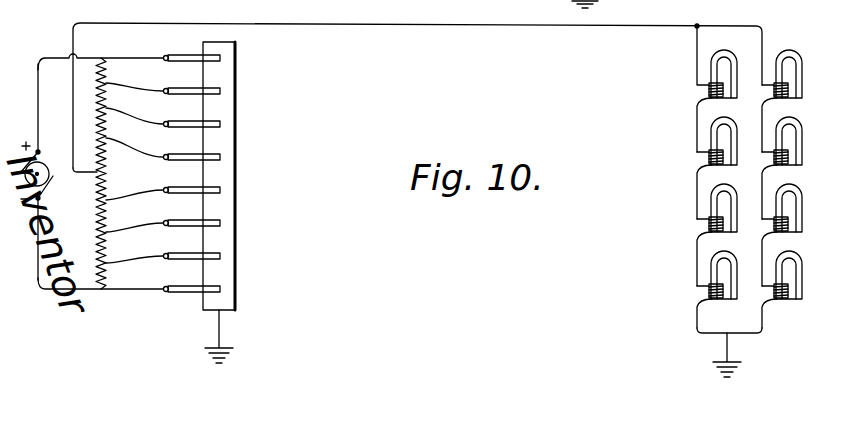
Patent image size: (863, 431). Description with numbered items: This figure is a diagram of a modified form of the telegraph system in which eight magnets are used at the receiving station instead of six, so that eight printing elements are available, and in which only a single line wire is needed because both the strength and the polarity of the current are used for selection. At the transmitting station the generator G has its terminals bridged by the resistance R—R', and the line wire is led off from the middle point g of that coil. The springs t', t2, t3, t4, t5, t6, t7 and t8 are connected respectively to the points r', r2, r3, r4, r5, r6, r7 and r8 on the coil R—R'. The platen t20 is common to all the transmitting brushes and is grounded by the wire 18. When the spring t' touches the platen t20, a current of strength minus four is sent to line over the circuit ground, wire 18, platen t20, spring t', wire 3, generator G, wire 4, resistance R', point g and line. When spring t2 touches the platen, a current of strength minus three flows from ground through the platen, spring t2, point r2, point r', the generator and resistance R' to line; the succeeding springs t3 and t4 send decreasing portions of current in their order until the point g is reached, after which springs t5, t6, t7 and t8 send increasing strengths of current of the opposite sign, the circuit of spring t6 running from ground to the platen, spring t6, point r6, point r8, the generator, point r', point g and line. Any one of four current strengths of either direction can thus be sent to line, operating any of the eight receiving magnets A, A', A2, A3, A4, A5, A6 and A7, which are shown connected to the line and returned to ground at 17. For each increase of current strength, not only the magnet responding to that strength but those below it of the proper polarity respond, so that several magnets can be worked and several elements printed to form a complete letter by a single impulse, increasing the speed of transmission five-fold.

The wire 3 is at (100, 54).
The wire 4 is at (100, 294).
The ground connection of lamps 17 is at (728, 352).
The wire 18 is at (220, 326).
The line wire line is at (417, 85).
The generator G is at (43, 172).
The resistance R is at (91, 116).
The resistance R' is at (88, 232).
The middle point g is at (98, 171).
The point r' is at (110, 49).
The point r2 is at (134, 80).
The point r3 is at (134, 111).
The point r4 is at (134, 142).
The point r5 is at (134, 192).
The point r6 is at (134, 224).
The point r7 is at (134, 254).
The point r8 is at (115, 282).
The spring t' is at (192, 51).
The spring t2 is at (192, 83).
The spring t3 is at (192, 116).
The spring t4 is at (192, 149).
The spring t5 is at (192, 182).
The spring t6 is at (192, 215).
The spring t7 is at (192, 248).
The spring t8 is at (192, 281).
The platen t20 is at (238, 118).
The lamp A is at (725, 89).
The lamp A' is at (791, 101).
The lamp A2 is at (728, 168).
The lamp A3 is at (792, 168).
The lamp A4 is at (728, 235).
The lamp A5 is at (792, 235).
The lamp A6 is at (728, 289).
The lamp A7 is at (793, 289).